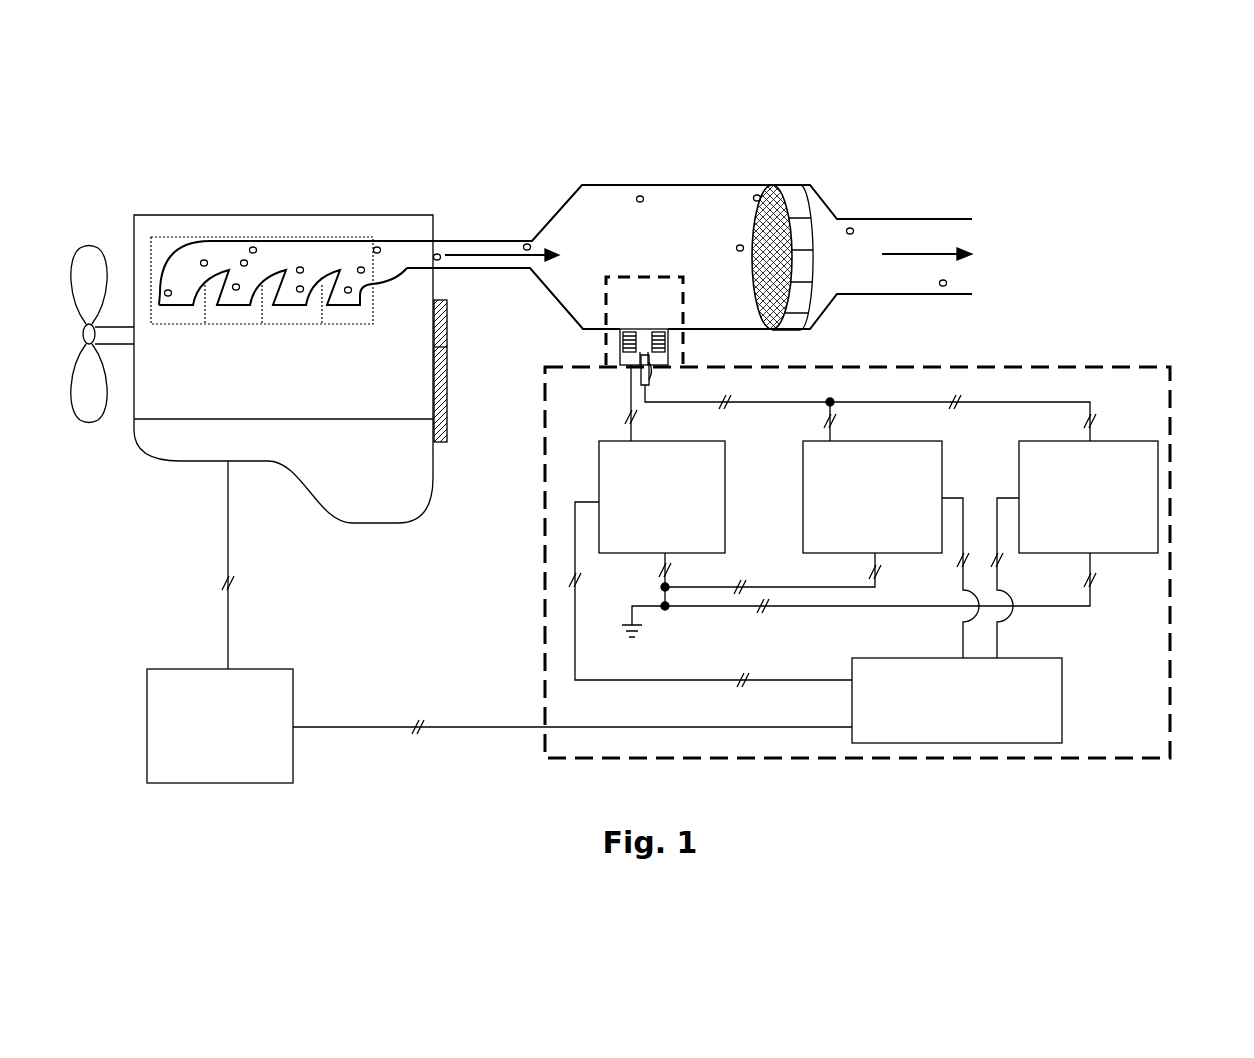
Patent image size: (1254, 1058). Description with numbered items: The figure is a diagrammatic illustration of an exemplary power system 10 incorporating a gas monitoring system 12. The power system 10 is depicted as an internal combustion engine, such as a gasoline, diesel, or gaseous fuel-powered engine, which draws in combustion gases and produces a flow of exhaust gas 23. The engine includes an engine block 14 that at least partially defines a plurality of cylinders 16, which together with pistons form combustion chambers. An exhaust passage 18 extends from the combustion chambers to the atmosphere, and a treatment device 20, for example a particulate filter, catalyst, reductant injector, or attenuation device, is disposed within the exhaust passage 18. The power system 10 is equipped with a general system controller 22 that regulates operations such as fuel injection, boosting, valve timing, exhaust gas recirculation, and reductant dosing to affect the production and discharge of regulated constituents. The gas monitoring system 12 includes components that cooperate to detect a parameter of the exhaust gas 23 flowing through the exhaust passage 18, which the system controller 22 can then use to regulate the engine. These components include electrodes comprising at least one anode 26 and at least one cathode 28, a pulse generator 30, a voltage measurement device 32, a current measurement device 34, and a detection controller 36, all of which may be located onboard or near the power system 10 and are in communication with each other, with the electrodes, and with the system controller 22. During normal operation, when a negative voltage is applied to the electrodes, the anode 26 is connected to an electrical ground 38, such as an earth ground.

The power system 10 is at (248, 112).
The gas monitoring system 12 is at (1175, 377).
The engine block 14 is at (259, 369).
The cylinders 16 is at (180, 325).
The exhaust passage 18 is at (477, 240).
The treatment device 20 is at (801, 228).
The system controller 22 is at (220, 726).
The exhaust gas 23 is at (537, 260).
The anode 26 is at (607, 353).
The cathode 28 is at (637, 379).
The pulse generator 30 is at (872, 497).
The voltage measurement device 32 is at (1088, 497).
The current measurement device 34 is at (662, 497).
The detection controller 36 is at (957, 700).
The electrical ground 38 is at (644, 635).